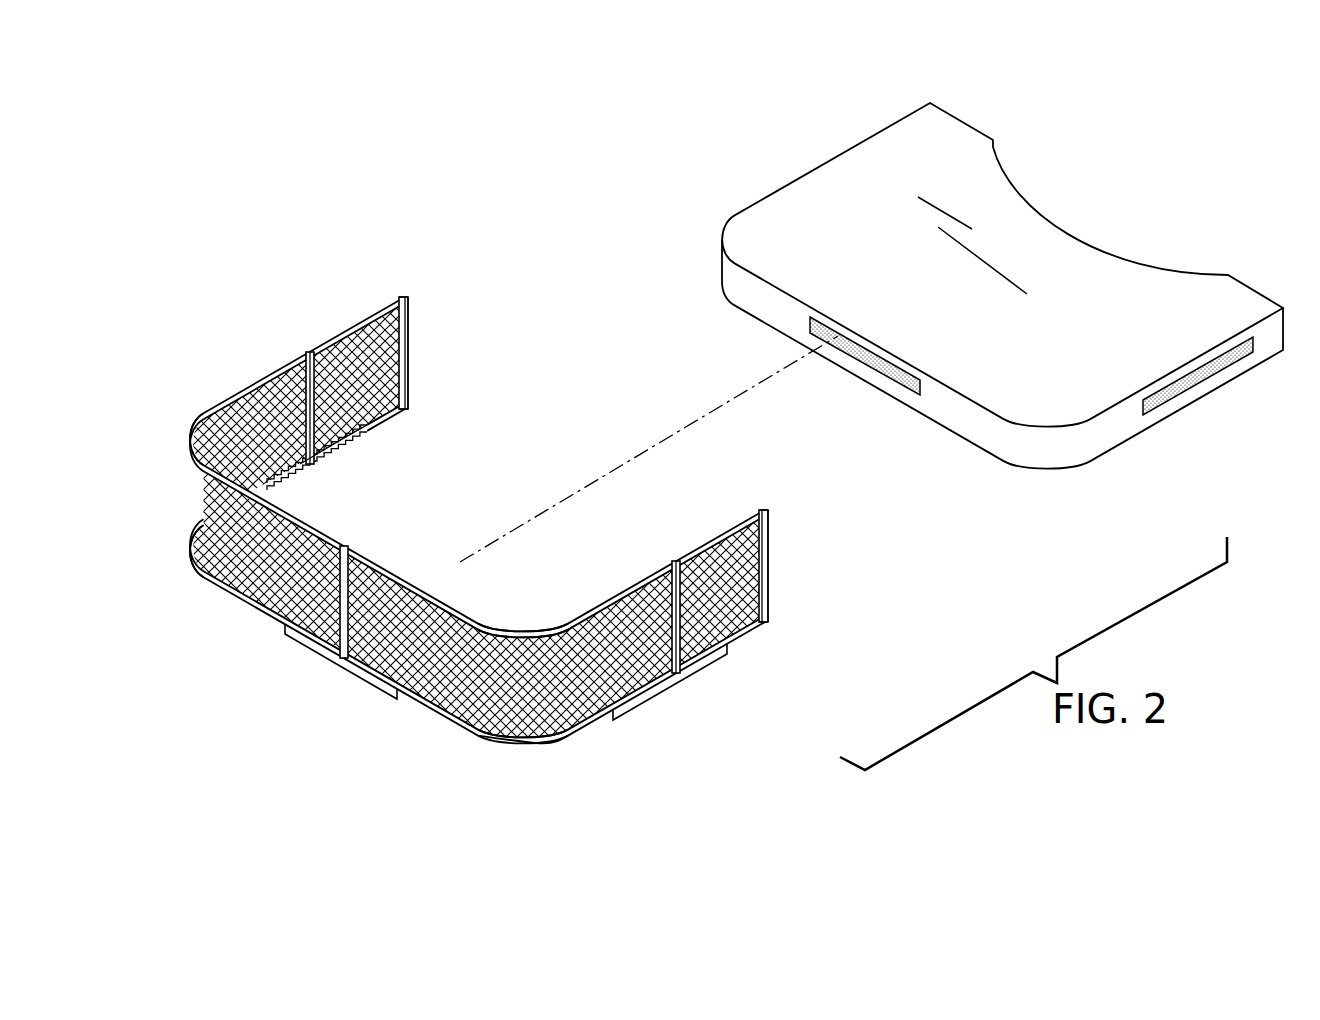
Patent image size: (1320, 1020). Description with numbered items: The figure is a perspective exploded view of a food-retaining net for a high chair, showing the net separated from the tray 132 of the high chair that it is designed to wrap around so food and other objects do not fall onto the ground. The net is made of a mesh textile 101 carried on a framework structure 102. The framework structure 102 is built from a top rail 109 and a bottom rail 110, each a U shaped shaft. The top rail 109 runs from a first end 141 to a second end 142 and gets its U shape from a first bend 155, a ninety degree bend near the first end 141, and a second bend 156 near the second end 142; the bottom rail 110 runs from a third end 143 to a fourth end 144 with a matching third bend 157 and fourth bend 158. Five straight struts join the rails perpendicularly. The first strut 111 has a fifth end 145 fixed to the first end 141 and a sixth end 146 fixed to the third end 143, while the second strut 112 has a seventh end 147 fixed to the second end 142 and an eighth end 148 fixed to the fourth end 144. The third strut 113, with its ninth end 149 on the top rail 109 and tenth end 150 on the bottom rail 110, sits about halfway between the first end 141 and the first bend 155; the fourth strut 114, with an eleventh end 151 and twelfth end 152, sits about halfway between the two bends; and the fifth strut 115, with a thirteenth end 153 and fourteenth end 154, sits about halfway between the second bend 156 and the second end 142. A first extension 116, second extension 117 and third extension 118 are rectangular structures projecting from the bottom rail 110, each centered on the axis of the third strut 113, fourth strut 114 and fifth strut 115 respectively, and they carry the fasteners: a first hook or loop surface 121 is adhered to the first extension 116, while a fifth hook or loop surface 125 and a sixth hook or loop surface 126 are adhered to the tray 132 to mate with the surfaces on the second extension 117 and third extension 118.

The mesh textile 101 is at (243, 588).
The framework structure 102 is at (215, 408).
The top rail 109 is at (537, 627).
The bottom rail 110 is at (540, 742).
The first strut 111 is at (405, 343).
The second strut 112 is at (769, 553).
The third strut 113 is at (300, 367).
The fourth strut 114 is at (457, 552).
The fifth strut 115 is at (697, 590).
The first extension 116 is at (358, 440).
The second extension 117 is at (366, 685).
The third extension 118 is at (643, 710).
The first hook or loop surface 121 is at (340, 462).
The fifth hook or loop surface 125 is at (875, 360).
The sixth hook or loop surface 126 is at (1190, 373).
The tray 132 is at (857, 163).
The first end 141 is at (400, 296).
The second end 142 is at (767, 510).
The third end 143 is at (407, 408).
The fourth end 144 is at (769, 617).
The fifth end 145 is at (406, 316).
The sixth end 146 is at (407, 392).
The seventh end 147 is at (769, 525).
The eighth end 148 is at (769, 605).
The ninth end 149 is at (313, 362).
The tenth end 150 is at (315, 458).
The eleventh end 151 is at (342, 552).
The twelfth end 152 is at (337, 648).
The thirteenth end 153 is at (674, 560).
The fourteenth end 154 is at (680, 663).
The first bend 155 is at (190, 437).
The second bend 156 is at (518, 628).
The third bend 157 is at (195, 575).
The fourth bend 158 is at (497, 745).